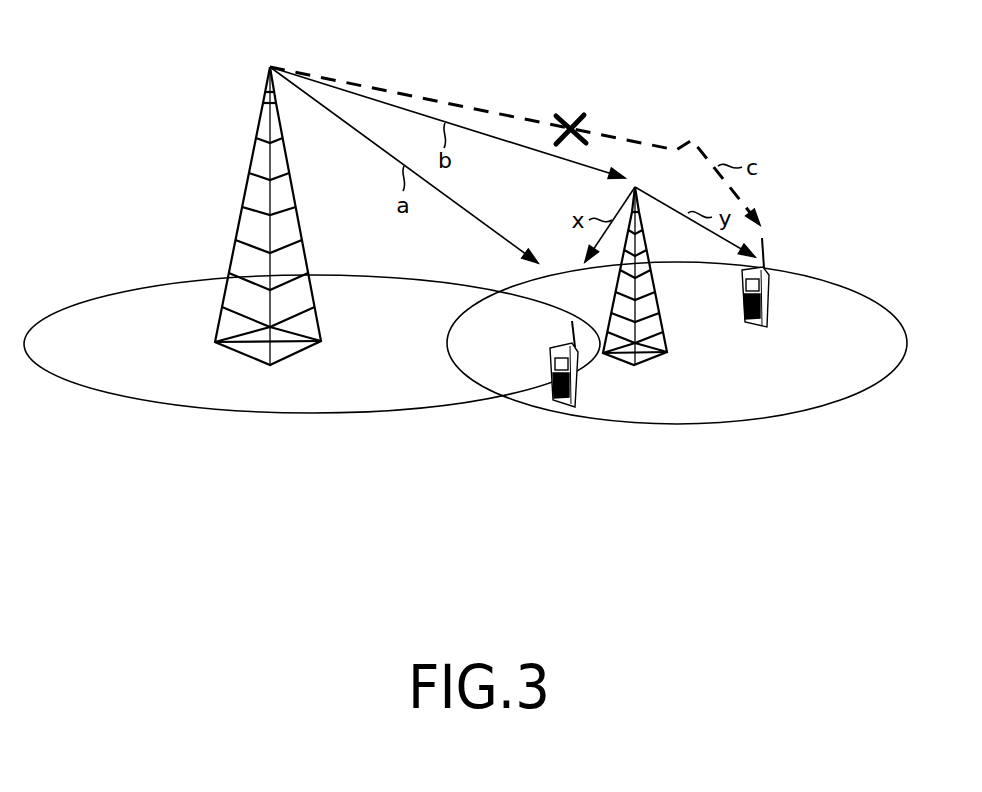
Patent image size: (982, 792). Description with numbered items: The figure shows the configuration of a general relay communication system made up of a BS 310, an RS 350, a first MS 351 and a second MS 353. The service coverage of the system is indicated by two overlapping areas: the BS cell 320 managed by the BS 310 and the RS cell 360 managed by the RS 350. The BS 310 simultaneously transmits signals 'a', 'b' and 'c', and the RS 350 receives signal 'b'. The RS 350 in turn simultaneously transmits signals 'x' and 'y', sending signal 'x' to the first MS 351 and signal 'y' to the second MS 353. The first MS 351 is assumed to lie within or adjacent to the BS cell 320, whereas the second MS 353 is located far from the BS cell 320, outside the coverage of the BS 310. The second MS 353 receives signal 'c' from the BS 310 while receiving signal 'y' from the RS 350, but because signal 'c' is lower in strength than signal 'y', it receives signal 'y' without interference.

The BS 310 is at (299, 222).
The BS cell 320 is at (322, 413).
The RS 350 is at (656, 282).
The first MS 351 is at (550, 371).
The second MS 353 is at (770, 300).
The RS cell 360 is at (677, 424).